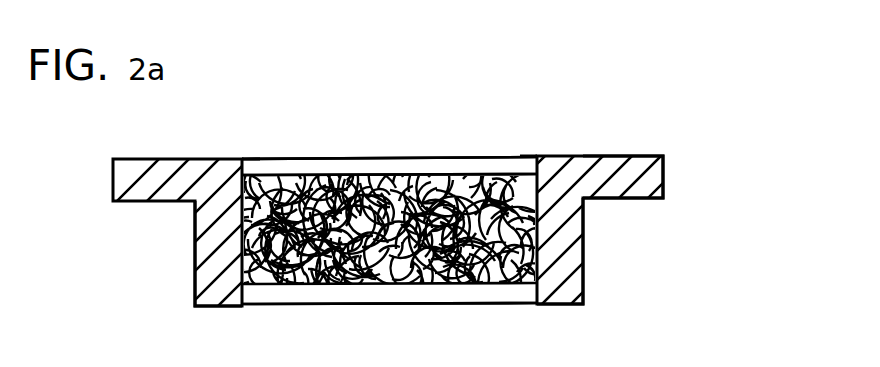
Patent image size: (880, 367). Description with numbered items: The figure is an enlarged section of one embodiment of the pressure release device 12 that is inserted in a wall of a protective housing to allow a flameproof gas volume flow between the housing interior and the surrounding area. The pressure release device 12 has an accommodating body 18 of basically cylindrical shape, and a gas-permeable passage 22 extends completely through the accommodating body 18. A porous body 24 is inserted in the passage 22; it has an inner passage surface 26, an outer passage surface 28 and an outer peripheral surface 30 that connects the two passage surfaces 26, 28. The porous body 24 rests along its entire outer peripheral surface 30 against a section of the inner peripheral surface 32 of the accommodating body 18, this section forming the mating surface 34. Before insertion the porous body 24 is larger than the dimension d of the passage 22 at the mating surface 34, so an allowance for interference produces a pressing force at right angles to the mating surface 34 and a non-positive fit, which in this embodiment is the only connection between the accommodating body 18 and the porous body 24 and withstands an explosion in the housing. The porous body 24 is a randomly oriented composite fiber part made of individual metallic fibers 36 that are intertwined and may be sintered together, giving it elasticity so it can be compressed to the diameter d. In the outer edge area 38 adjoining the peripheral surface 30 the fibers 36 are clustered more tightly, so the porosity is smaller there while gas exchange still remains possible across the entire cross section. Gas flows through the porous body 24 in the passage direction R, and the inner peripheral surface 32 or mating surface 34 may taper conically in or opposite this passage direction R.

The pressure release device 12 is at (621, 146).
The accommodating body 18 is at (642, 146).
The gas-permeable passage 22 is at (388, 158).
The porous body 24 is at (478, 172).
The inner passage surface 26 is at (340, 176).
The outer passage surface 28 is at (504, 288).
The outer peripheral surface 30 is at (540, 226).
The inner peripheral surface 32 is at (245, 298).
The mating surface 34 is at (245, 253).
The metallic fibers 36 is at (445, 183).
The outer edge area 38 is at (255, 157).
The passage direction R is at (386, 150).
The dimension of the passage d is at (247, 322).